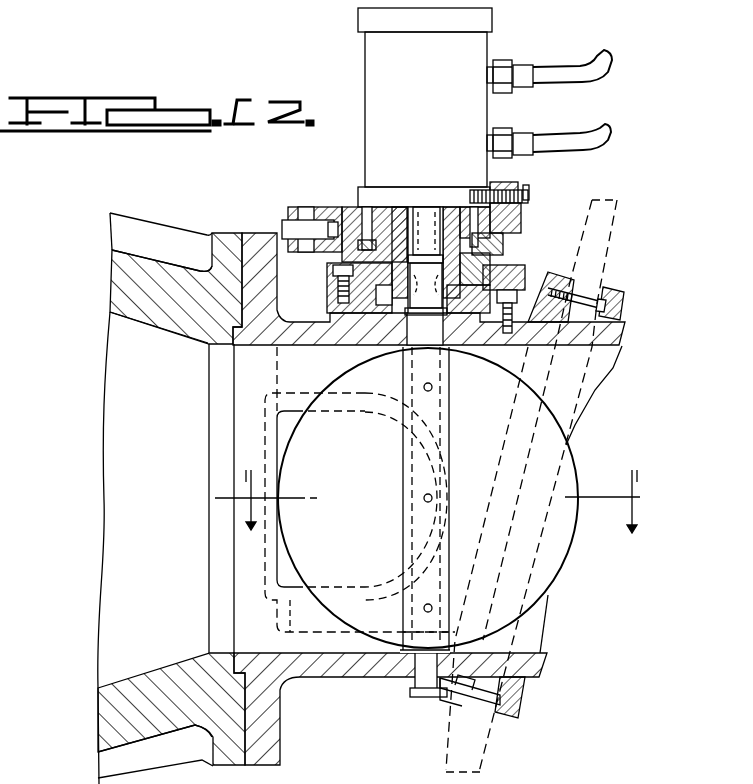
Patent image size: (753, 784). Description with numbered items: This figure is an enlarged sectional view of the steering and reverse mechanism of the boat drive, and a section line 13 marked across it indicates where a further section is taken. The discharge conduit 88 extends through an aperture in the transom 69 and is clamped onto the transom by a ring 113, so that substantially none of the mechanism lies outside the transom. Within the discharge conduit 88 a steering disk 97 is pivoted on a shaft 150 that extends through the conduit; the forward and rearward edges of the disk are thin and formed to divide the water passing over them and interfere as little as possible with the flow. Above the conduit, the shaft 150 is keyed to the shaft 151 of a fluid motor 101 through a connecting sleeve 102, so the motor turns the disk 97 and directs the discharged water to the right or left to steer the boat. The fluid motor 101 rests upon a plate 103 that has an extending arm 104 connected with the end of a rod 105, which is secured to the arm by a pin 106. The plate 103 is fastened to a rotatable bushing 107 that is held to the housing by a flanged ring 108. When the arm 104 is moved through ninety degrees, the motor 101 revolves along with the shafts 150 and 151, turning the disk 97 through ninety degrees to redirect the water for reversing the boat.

The fluid motor 101 is at (470, 53).
The shaft 151 is at (427, 217).
The extending arm 104 is at (305, 210).
The plate 103 is at (348, 206).
The rod 105 is at (283, 222).
The pin 106 is at (307, 252).
The connecting sleeve 102 is at (520, 225).
The rotatable bushing 107 is at (513, 252).
The flanged ring 108 is at (520, 275).
The transom 69 is at (607, 268).
The ring 113 is at (620, 309).
The discharge conduit 88 is at (620, 334).
The shaft 150 is at (406, 442).
The steering disk 97 is at (565, 472).
The section line 13- 13 is at (215, 498).